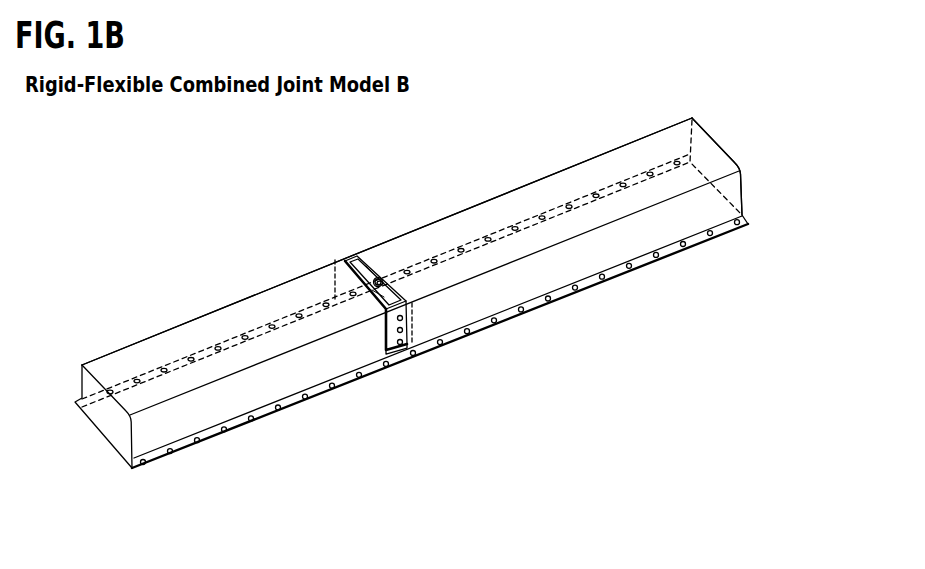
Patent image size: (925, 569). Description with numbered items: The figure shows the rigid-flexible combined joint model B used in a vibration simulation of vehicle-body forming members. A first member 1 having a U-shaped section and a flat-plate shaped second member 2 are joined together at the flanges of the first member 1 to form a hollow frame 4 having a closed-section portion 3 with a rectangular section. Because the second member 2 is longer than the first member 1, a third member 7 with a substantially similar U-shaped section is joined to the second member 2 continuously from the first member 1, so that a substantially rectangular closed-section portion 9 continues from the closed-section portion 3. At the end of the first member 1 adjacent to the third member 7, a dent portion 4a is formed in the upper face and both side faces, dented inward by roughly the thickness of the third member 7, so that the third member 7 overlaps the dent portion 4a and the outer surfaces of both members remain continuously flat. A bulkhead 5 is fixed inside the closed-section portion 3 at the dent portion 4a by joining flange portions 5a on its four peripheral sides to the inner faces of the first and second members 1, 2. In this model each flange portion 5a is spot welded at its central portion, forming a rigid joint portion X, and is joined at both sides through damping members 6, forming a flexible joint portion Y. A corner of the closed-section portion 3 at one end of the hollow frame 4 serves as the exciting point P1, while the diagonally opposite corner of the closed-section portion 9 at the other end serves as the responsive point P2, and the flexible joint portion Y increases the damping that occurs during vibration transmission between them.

The first member 1 is at (117, 367).
The second member 2 is at (80, 412).
The closed-section portion 3 is at (114, 421).
The hollow frame 4 is at (178, 318).
The dent portion 4a is at (385, 278).
The bulkhead 5 is at (343, 283).
The flange portions 5a is at (350, 260).
The damping member 6 is at (368, 262).
The third member 7 is at (593, 180).
The closed-section portion 9 is at (758, 168).
The exciting point P1 is at (132, 482).
The responsive point P2 is at (690, 100).
The rigid joint portion X is at (381, 270).
The flexible joint portion Y is at (366, 264).